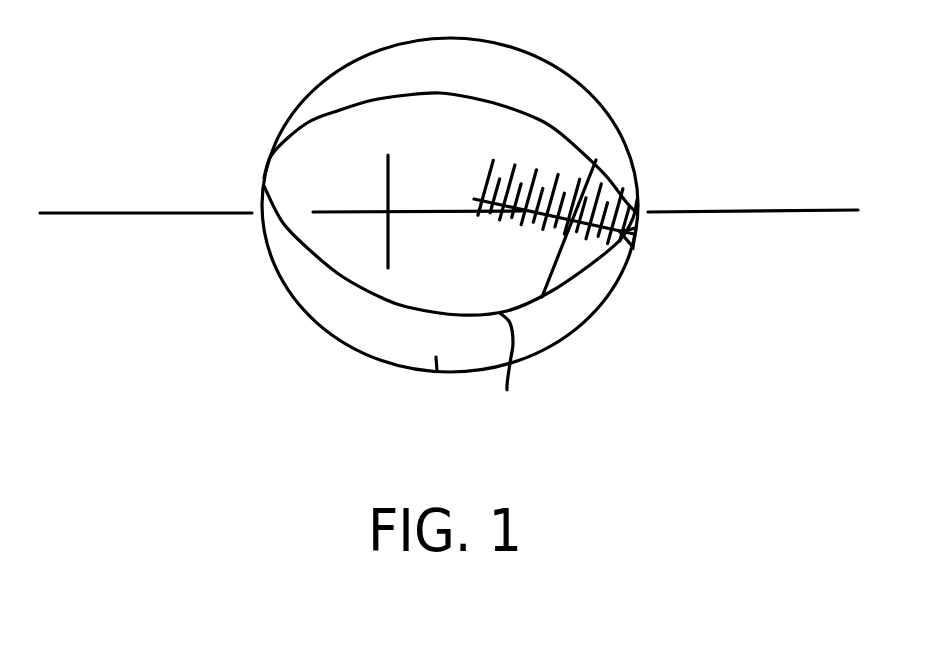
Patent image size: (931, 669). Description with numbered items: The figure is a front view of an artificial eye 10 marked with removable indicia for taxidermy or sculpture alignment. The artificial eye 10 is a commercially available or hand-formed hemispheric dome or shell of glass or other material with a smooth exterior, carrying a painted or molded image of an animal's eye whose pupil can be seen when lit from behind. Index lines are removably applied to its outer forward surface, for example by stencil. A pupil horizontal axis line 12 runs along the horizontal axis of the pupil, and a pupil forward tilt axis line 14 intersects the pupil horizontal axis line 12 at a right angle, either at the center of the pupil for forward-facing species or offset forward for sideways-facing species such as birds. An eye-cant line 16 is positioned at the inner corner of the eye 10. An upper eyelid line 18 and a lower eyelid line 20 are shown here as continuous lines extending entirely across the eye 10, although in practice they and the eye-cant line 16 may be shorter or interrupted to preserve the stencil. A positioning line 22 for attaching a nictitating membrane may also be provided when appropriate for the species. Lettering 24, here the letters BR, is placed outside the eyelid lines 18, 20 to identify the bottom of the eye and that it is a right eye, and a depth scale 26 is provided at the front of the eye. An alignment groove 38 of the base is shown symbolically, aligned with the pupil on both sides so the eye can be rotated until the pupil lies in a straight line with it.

The artificial eye 10 is at (330, 95).
The pupil horizontal axis line 12 is at (338, 213).
The pupil forward tilt axis line 14 is at (383, 247).
The eye-cant line 16 is at (553, 272).
The upper eyelid line 18 is at (547, 120).
The lower eyelid line 20 is at (507, 390).
The positioning line 22 is at (630, 232).
The lettering 24 is at (437, 370).
The depth scale 26 is at (635, 200).
The alignment groove 38 is at (132, 212).